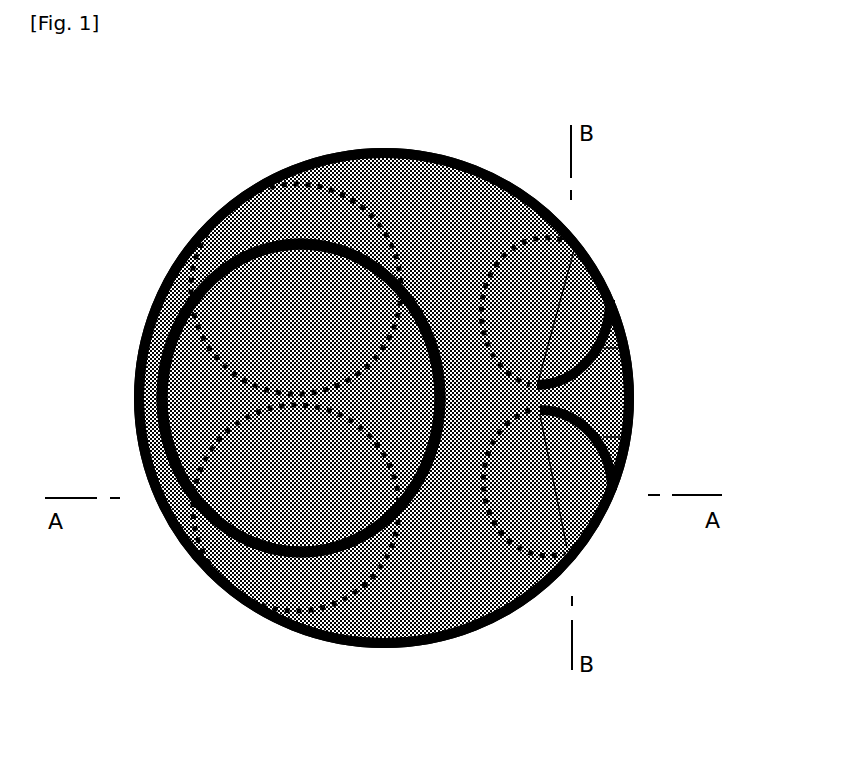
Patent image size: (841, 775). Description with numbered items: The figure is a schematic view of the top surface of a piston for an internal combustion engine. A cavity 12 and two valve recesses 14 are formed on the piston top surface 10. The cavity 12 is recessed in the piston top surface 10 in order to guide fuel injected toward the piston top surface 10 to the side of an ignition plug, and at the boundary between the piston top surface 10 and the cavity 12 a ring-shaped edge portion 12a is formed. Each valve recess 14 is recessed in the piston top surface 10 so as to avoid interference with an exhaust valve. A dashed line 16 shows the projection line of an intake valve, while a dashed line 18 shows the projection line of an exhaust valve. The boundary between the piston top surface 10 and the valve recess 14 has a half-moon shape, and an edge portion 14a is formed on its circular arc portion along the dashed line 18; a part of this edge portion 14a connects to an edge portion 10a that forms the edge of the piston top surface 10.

The piston top surface 10 is at (178, 596).
The edge portion 10a is at (425, 647).
The cavity 12 is at (193, 383).
The ring-shaped edge portion 12a is at (287, 237).
The valve recess 14 is at (575, 308).
The edge portion 14a is at (630, 355).
The dashed line 16 is at (340, 185).
The dashed line 18 is at (495, 240).